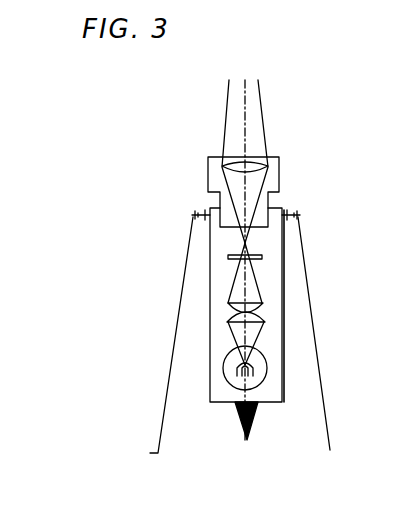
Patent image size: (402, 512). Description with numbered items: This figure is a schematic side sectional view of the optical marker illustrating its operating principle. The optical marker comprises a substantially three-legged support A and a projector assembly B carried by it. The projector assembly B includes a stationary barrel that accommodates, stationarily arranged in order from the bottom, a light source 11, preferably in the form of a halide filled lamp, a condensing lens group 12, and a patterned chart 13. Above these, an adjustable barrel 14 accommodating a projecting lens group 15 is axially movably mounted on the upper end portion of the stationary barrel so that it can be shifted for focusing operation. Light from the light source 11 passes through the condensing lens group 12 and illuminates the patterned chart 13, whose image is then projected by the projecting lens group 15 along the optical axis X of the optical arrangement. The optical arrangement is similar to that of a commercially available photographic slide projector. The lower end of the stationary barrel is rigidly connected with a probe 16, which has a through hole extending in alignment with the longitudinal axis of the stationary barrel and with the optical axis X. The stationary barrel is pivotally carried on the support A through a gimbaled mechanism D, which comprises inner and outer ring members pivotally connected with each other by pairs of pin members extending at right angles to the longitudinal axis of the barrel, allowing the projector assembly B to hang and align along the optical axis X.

The optical axis X is at (247, 123).
The projecting lens group 15 is at (266, 166).
The adjustable barrel 14 is at (279, 175).
The patterned chart 13 is at (262, 257).
The projector assembly B is at (284, 273).
The three-legged support A is at (310, 298).
The condensing lens group 12 is at (266, 326).
The light source 11 is at (258, 370).
The gimbaled mechanism D is at (195, 196).
The probe 16 is at (256, 418).